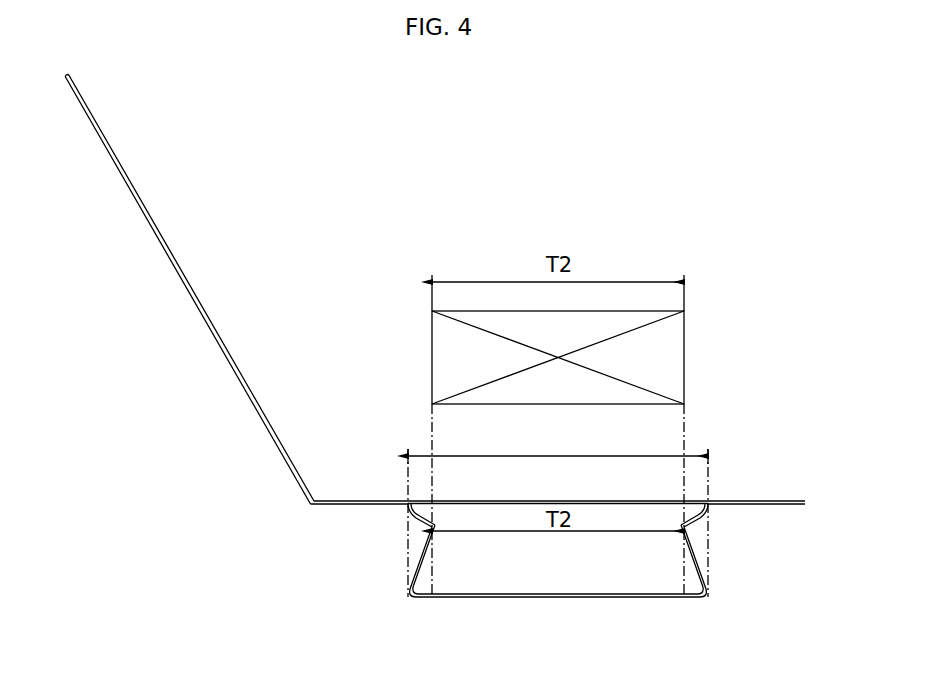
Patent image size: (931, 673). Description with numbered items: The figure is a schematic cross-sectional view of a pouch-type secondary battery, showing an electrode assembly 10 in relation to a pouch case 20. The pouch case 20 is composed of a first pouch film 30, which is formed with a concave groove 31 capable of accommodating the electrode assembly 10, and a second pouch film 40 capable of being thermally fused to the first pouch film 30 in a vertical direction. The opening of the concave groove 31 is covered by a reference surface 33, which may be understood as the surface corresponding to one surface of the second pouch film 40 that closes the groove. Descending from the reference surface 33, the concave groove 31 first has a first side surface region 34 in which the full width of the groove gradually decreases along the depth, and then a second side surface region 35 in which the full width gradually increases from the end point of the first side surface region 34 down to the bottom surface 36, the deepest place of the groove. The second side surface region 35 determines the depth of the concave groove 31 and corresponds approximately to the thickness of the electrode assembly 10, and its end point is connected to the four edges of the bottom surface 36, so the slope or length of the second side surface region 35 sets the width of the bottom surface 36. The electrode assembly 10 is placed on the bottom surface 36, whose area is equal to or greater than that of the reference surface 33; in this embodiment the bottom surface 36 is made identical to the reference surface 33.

The electrode assembly 10 is at (684, 338).
The pouch case 20 is at (435, 364).
The first pouch film 30 is at (558, 558).
The concave groove 31 is at (590, 571).
The reference surface 33 is at (618, 500).
The first side surface region 34 is at (420, 521).
The second side surface region 35 is at (419, 556).
The bottom surface 36 is at (520, 598).
The second pouch film 40 is at (181, 265).